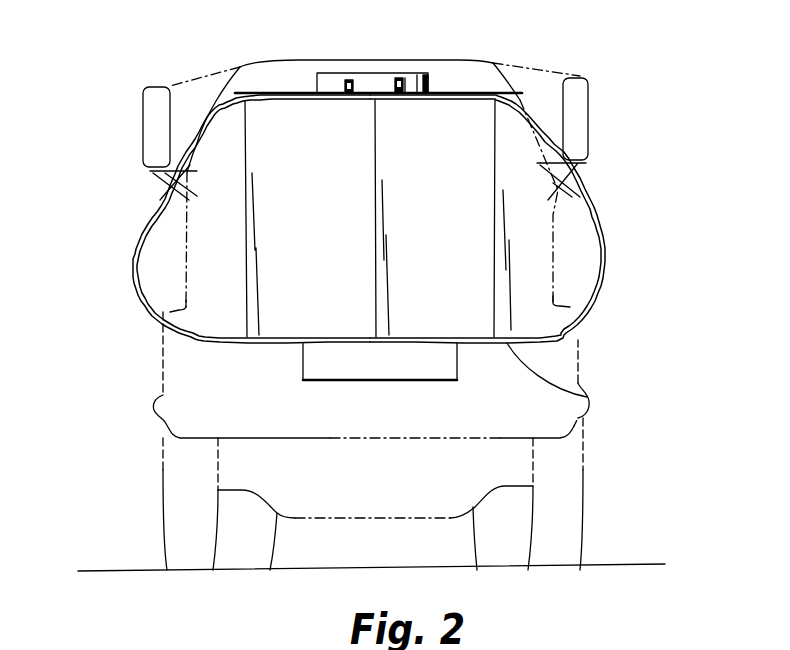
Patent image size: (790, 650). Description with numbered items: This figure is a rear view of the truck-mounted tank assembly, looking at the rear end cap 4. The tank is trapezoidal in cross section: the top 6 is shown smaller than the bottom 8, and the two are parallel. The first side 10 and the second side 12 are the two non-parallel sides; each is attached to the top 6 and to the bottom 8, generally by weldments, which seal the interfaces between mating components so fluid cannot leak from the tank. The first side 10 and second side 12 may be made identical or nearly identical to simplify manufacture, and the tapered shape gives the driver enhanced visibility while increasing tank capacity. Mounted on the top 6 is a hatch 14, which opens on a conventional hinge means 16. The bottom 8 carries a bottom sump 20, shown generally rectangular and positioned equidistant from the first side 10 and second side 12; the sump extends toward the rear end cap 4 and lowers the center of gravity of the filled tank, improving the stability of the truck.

The rear end cap 4 is at (537, 306).
The top 6 is at (468, 93).
The bottom 8 is at (588, 399).
The first side 10 is at (143, 227).
The second side 12 is at (597, 210).
The hatch 14 is at (352, 73).
The hinge means 16 is at (400, 77).
The bottom sump 20 is at (303, 380).